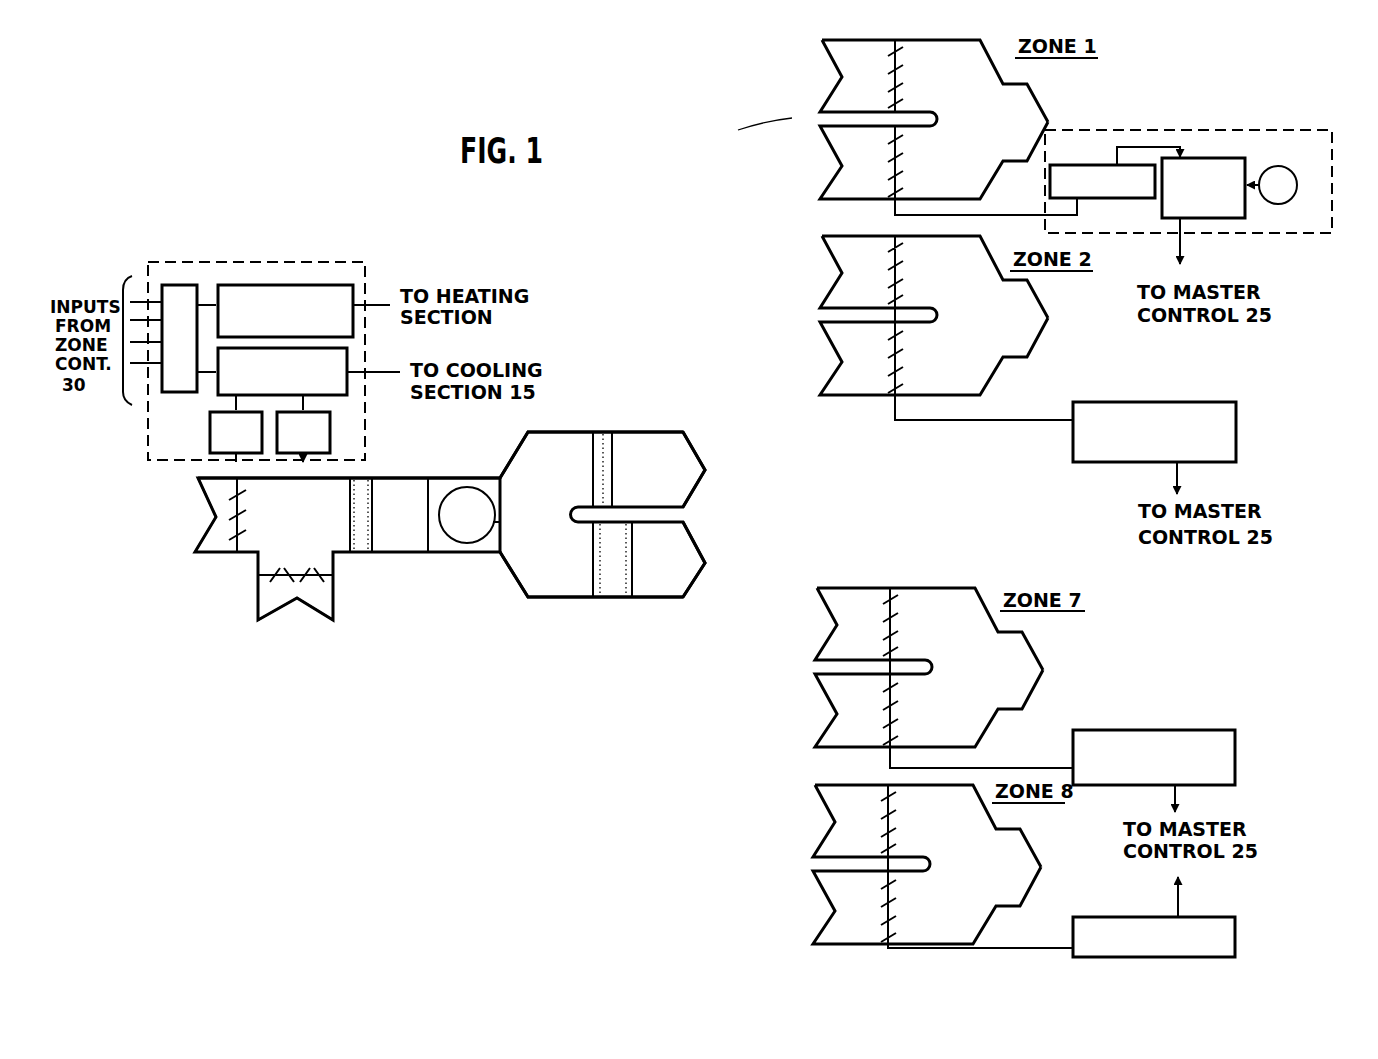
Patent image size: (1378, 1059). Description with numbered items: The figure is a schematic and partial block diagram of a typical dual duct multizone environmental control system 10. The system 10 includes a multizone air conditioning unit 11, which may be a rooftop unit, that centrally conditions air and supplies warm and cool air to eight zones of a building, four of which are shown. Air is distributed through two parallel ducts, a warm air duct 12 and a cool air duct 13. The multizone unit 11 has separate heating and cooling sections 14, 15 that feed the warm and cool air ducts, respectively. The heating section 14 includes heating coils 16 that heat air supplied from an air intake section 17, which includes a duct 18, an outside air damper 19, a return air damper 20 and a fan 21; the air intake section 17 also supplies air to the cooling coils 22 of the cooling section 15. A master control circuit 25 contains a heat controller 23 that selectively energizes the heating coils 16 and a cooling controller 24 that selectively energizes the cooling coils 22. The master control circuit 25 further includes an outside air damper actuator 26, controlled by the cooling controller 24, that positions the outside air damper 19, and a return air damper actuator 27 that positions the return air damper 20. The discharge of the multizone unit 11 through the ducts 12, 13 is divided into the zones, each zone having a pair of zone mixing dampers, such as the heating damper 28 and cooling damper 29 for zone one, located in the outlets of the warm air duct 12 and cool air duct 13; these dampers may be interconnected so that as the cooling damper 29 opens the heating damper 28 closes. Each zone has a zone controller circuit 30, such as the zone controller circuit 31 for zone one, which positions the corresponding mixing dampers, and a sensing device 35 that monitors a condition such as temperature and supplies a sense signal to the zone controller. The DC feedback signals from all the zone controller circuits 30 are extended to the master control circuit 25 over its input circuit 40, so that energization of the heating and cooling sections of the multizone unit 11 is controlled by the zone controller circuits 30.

The dual duct multizone environmental control system 10 is at (520, 677).
The multizone air conditioning unit 11 is at (508, 601).
The warm air duct 12 is at (662, 443).
The cool air duct 13 is at (683, 596).
The heating section 14 is at (533, 450).
The cooling section 15 is at (563, 584).
The heating coils 16 is at (608, 480).
The air intake section 17 is at (268, 478).
The duct 18 is at (407, 492).
The outside air damper 19 is at (196, 541).
The return air damper 20 is at (260, 595).
The fan 21 is at (464, 499).
The cooling coils 22 is at (605, 550).
The heat controller 23 is at (285, 298).
The cooling controller 24 is at (348, 361).
The master control circuit 25 is at (339, 259).
The outside air damper actuator 26 is at (210, 430).
The return air damper actuator 27 is at (330, 430).
The heating damper 28 is at (918, 76).
The cooling damper 29 is at (918, 162).
The zone controller circuit 30 is at (1334, 411).
The zone controller circuit 31 is at (1322, 199).
The sensing device 35 is at (1297, 179).
The input circuit 40 is at (176, 294).